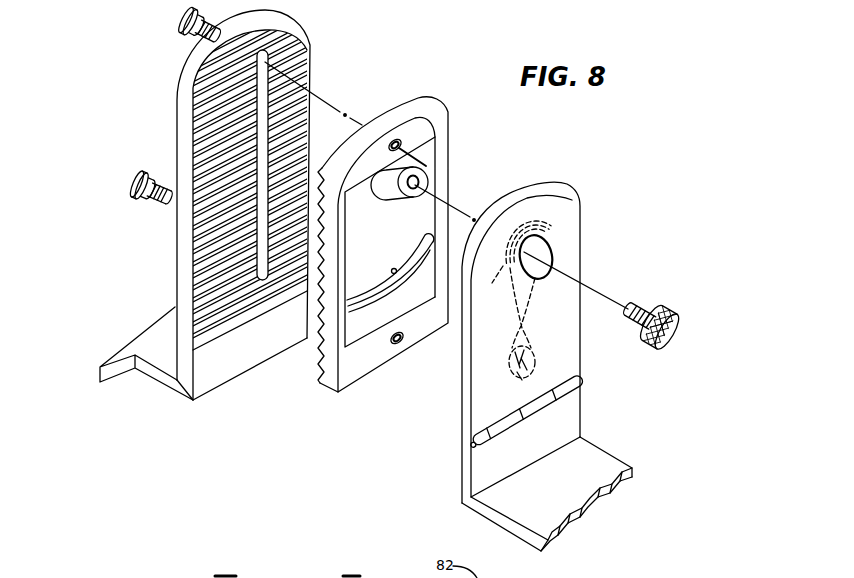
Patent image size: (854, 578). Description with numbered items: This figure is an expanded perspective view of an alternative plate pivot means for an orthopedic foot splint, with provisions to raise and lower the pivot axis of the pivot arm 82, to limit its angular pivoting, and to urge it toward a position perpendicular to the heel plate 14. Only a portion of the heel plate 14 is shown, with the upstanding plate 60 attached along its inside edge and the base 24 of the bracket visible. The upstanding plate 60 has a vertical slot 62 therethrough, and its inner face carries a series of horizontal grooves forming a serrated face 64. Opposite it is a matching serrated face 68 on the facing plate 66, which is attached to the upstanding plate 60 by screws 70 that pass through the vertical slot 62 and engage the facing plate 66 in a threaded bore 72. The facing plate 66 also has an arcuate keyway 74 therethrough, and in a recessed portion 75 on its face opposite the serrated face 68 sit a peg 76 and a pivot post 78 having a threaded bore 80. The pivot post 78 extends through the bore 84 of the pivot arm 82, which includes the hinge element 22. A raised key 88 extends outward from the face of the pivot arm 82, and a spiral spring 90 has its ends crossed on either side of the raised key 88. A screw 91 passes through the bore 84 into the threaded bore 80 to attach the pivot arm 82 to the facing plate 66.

The heel plate 14 is at (142, 351).
The hinge element 22 is at (593, 380).
The bracket base 24 is at (528, 496).
The upstanding plate 60 is at (203, 388).
The vertical slot 62 is at (258, 110).
The serrated face 64 is at (193, 223).
The facing plate 66 is at (352, 375).
The serrated face 68 is at (318, 335).
The screws 70 is at (177, 15).
The threaded bore 72 is at (401, 142).
The arcuate keyway 74 is at (377, 298).
The recessed portion 75 is at (428, 187).
The peg 76 is at (395, 268).
The pivot post 78 is at (386, 191).
The threaded bore 80 is at (415, 182).
The pivot arm 82 is at (541, 341).
The bore 84 is at (553, 238).
The raised key 88 is at (510, 373).
The spiral spring 90 is at (503, 268).
The screw 91 is at (676, 330).